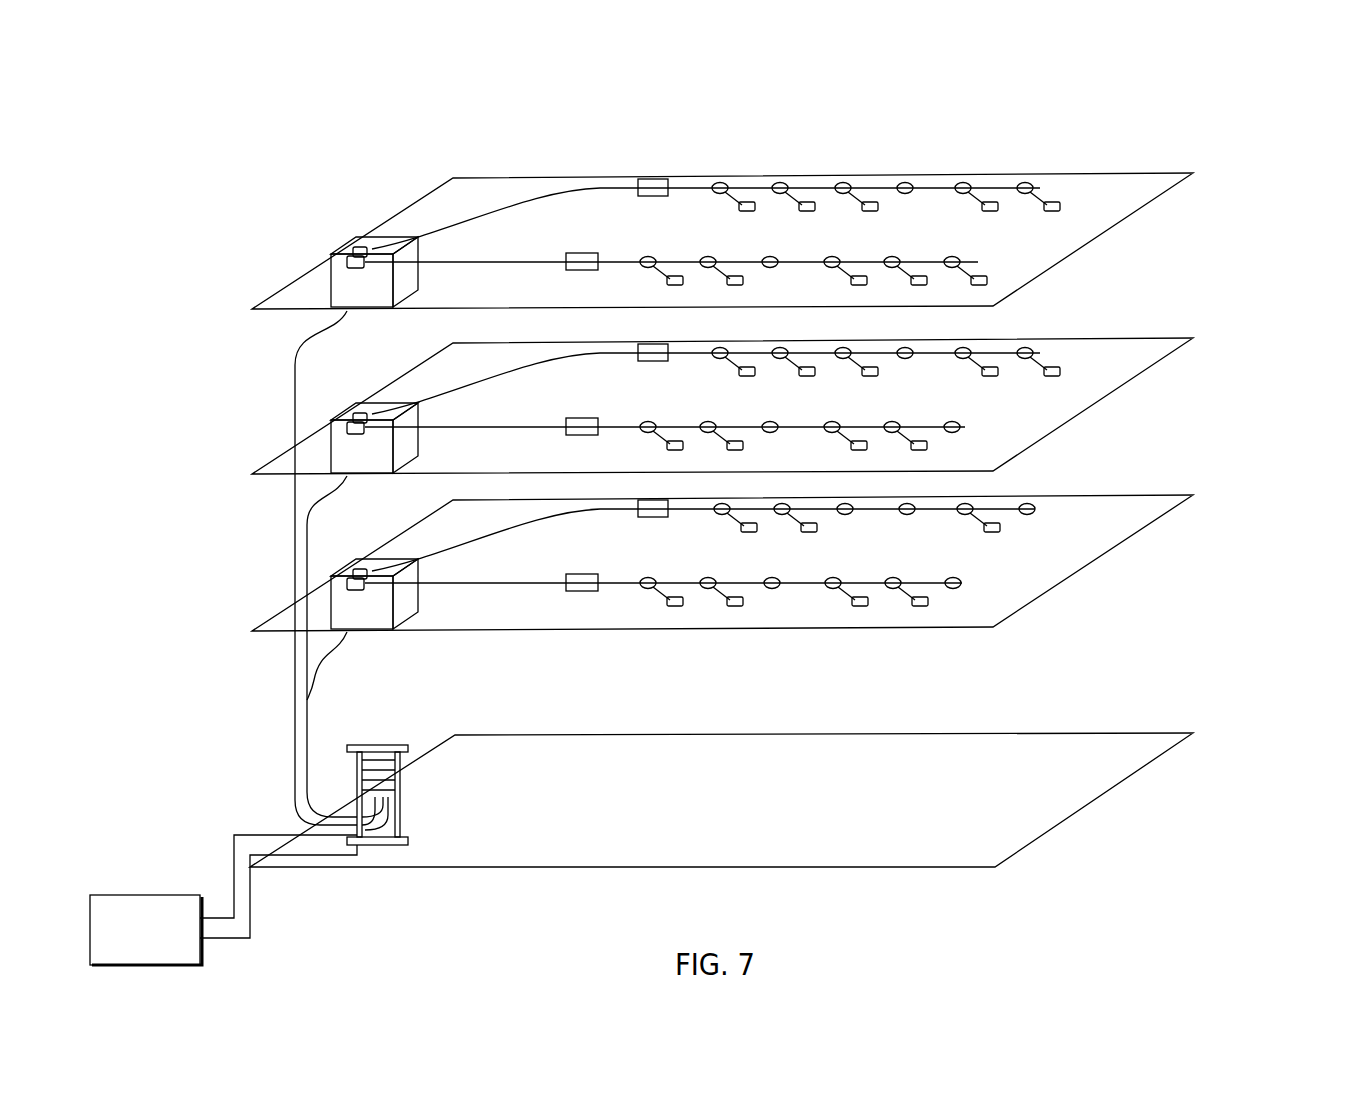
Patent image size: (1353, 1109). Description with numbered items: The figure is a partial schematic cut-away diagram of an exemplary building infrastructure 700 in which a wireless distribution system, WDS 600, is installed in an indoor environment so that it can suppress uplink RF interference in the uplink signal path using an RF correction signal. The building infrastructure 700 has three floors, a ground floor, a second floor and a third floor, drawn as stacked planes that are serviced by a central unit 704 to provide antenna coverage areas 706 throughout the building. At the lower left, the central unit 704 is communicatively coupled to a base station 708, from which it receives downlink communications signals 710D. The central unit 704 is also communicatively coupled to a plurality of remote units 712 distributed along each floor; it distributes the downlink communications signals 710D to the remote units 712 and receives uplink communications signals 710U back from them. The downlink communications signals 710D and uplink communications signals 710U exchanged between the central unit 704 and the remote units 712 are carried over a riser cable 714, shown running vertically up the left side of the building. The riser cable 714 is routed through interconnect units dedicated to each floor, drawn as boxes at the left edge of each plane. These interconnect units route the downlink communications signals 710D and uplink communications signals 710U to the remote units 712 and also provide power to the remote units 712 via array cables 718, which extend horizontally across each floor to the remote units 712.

The building infrastructure 700 is at (882, 112).
The WDS 600 is at (1183, 668).
The antenna coverage areas 706 is at (1135, 348).
The remote units 712 is at (992, 201).
The array cables 718 is at (603, 185).
The riser cable 714 is at (292, 722).
The downlink communications signals 710D is at (264, 942).
The uplink communications signals 710U is at (226, 828).
The central unit 704 is at (420, 800).
The base station 708 is at (163, 947).